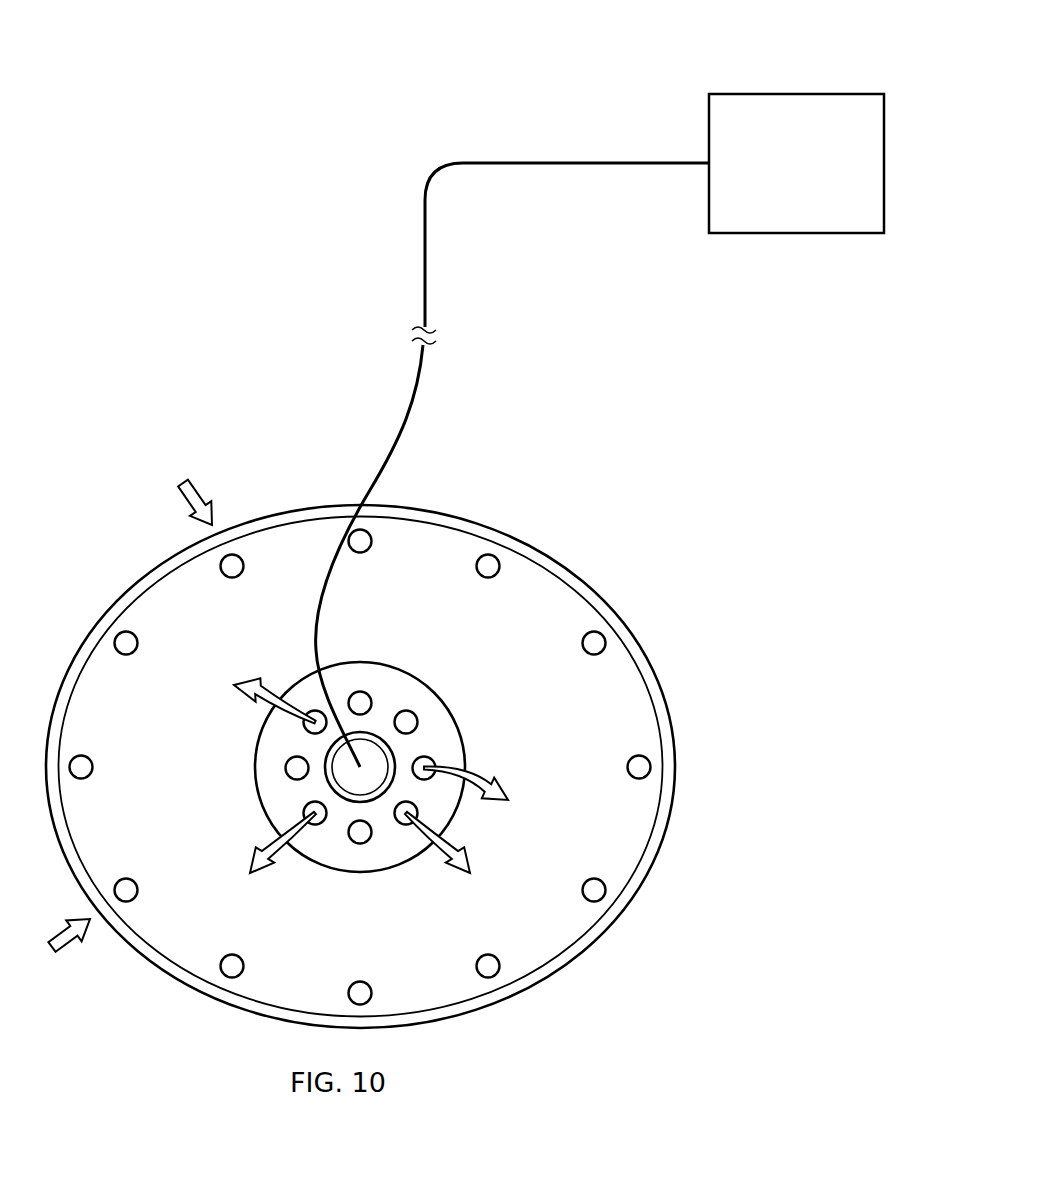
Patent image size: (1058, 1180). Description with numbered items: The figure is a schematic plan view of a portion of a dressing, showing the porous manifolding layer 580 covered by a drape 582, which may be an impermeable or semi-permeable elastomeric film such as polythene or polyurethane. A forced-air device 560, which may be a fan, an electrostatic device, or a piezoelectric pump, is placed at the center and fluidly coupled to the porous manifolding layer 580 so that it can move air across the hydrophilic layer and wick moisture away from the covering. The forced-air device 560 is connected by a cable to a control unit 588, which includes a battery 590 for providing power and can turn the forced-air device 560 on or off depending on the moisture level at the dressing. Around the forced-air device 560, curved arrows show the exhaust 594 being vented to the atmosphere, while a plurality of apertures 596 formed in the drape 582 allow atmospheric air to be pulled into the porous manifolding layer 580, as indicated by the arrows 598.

The forced-air device 560 is at (413, 672).
The porous manifolding layer 580 is at (672, 718).
The drape 582 is at (632, 828).
The control unit 588 is at (845, 92).
The battery 590 is at (885, 150).
The exhaust 594 is at (505, 786).
The apertures 596 is at (126, 643).
The arrows 598 is at (68, 947).